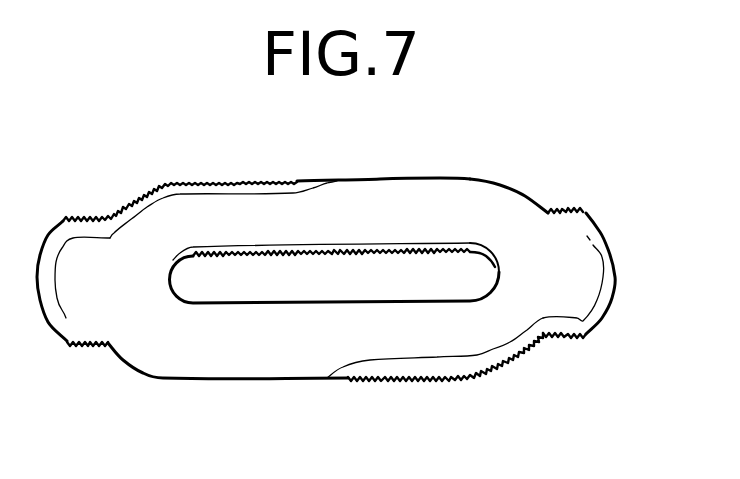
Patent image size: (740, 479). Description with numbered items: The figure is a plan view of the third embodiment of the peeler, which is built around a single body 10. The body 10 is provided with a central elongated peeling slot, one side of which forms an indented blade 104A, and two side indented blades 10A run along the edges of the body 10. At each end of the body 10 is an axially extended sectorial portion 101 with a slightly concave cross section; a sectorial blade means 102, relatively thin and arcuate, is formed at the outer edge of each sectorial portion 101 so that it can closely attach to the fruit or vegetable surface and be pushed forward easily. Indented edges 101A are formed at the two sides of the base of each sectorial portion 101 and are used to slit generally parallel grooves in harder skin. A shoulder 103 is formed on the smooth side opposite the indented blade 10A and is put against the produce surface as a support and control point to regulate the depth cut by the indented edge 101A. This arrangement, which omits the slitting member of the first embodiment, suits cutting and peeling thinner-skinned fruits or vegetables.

The body 10 is at (410, 168).
The indented blade 10A is at (199, 184).
The sectorial portion 101 is at (597, 212).
The indented edge 101A is at (565, 339).
The sectorial blade means 102 is at (606, 271).
The shoulder 103 is at (517, 195).
The indented blade 104A is at (315, 251).